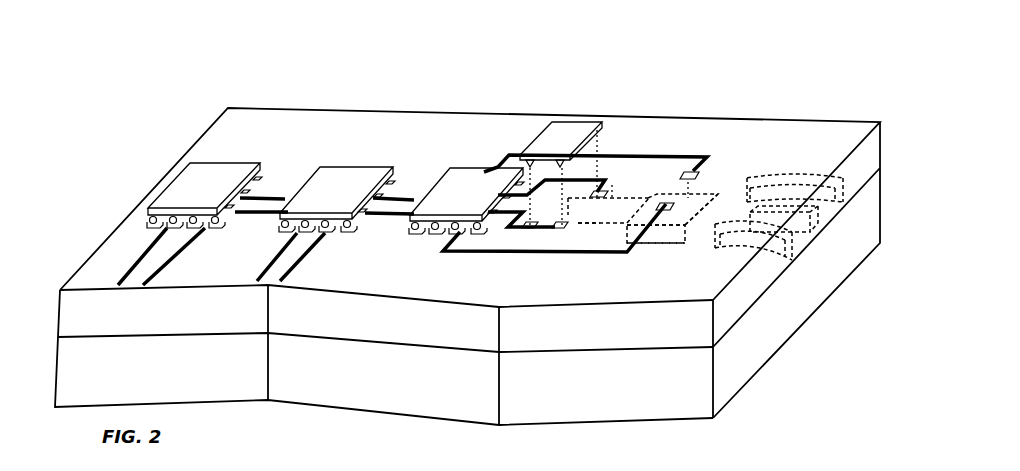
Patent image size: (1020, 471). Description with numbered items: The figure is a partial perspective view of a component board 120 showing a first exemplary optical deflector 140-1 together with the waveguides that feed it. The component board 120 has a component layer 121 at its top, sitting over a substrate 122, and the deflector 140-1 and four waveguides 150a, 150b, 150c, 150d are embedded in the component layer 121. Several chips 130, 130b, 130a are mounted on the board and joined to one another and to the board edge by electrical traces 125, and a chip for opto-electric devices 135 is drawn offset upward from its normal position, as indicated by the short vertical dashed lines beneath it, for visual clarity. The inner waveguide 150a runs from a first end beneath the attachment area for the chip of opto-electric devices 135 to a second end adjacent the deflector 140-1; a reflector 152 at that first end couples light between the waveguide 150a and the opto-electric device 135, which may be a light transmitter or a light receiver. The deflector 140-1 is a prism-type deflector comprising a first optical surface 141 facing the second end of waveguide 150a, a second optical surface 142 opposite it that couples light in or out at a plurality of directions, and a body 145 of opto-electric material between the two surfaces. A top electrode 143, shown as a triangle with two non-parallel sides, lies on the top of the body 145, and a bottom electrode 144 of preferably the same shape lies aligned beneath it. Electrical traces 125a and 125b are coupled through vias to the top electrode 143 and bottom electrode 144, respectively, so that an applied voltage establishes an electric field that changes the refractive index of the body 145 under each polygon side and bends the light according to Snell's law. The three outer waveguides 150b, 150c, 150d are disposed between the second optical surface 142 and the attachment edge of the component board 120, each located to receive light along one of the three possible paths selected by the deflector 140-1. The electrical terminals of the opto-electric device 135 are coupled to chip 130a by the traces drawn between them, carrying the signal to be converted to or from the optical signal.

The component board 120 is at (228, 108).
The component layer 121 is at (875, 148).
The substrate 122 is at (352, 392).
The electrical traces 125 is at (137, 262).
The electrical trace 125a is at (668, 190).
The electrical trace 125b is at (575, 255).
The chip 130 is at (190, 178).
The chip 130a is at (468, 180).
The chip 130b is at (337, 178).
The chip for opto-electric devices 135 is at (567, 135).
The deflector 140-1 is at (717, 194).
The first optical surface 141 is at (657, 200).
The second optical surface 142 is at (693, 230).
The top electrode 143 is at (685, 172).
The bottom electrode 144 is at (653, 247).
The body of opto-electric material 145 is at (662, 233).
The waveguide 150a is at (613, 197).
The waveguide 150b is at (798, 172).
The waveguide 150c is at (810, 220).
The waveguide 150d is at (788, 250).
The reflector 152 is at (575, 223).